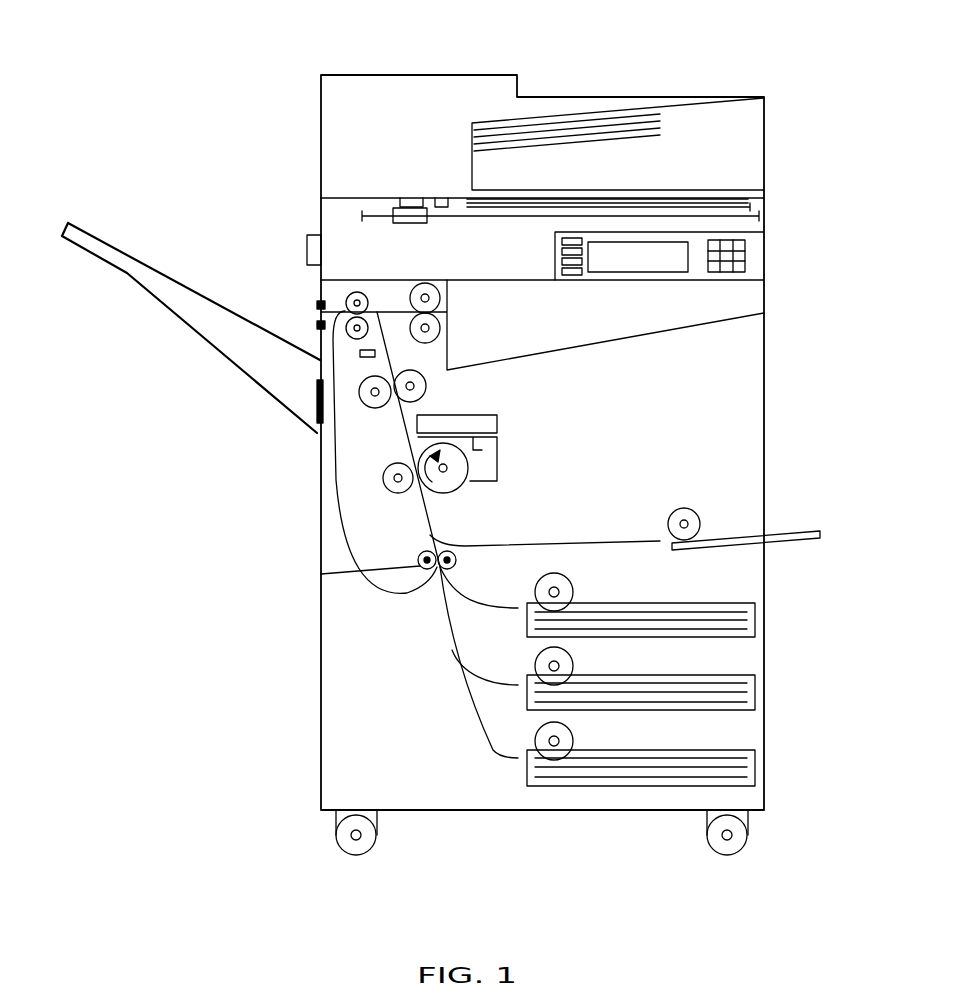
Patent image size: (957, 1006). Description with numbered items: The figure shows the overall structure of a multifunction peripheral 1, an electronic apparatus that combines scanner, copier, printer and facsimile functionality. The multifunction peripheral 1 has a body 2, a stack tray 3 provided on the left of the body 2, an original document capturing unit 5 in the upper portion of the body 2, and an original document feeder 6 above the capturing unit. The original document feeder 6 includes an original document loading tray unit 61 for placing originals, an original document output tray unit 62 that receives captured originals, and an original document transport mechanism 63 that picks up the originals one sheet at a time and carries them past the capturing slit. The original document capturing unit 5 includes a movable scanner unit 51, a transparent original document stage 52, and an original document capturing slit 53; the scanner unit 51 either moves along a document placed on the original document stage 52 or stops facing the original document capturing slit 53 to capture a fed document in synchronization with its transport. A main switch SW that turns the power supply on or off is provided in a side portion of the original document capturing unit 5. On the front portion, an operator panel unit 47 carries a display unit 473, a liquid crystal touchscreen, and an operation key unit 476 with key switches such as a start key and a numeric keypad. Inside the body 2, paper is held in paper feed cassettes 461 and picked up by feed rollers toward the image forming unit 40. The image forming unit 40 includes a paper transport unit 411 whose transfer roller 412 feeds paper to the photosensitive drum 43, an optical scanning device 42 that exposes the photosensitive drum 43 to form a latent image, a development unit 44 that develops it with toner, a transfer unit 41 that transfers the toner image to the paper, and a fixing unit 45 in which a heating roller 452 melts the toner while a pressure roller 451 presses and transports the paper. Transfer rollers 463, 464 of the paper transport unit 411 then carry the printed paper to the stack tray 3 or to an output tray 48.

The multifunction peripheral 1 is at (142, 73).
The body 2 is at (745, 460).
The stack tray 3 is at (160, 330).
The original document capturing unit 5 is at (515, 205).
The original document feeder 6 is at (618, 96).
The original document loading tray unit 61 is at (680, 103).
The original document output tray unit 62 is at (697, 190).
The original document transport mechanism 63 is at (398, 148).
The original document stage 52 is at (750, 203).
The original document capturing slit 53 is at (407, 199).
The scanner unit 51 is at (411, 223).
The main switch SW is at (340, 225).
The operator panel unit 47 is at (664, 279).
The display unit 473 is at (642, 265).
The operation key unit 476 is at (745, 250).
The output tray 48 is at (603, 347).
The image forming unit 40 is at (417, 492).
The transfer unit 41 is at (387, 493).
The optical scanning device 42 is at (500, 426).
The photosensitive drum 43 is at (455, 485).
The development unit 44 is at (497, 460).
The fixing unit 45 is at (380, 420).
The pressure roller 451 is at (315, 432).
The heating roller 452 is at (426, 386).
The paper transport unit 411 is at (263, 438).
The transfer roller 412 is at (335, 573).
The transfer roller 463 is at (413, 332).
The transfer roller 464 is at (347, 300).
The paper feed cassettes 461 is at (694, 679).